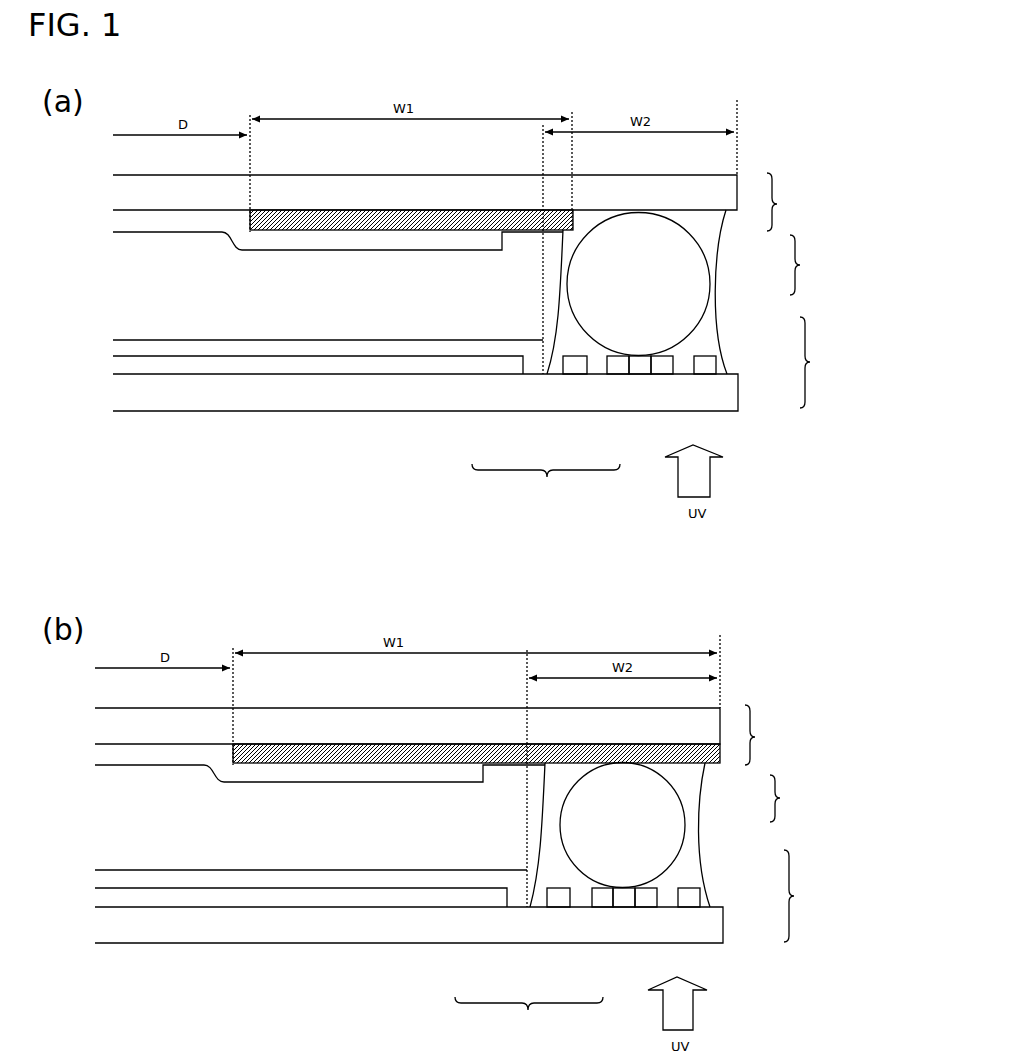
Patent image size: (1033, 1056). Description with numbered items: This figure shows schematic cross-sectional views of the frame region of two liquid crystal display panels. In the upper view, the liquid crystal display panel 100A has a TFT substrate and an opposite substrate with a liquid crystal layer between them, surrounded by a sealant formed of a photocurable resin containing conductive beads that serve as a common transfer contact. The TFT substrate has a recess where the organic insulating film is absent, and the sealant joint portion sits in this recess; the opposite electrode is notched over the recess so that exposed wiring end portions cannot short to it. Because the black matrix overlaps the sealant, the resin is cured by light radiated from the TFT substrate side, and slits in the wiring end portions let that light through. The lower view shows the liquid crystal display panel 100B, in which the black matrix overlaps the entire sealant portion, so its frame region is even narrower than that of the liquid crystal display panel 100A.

The liquid crystal display panel 100A is at (715, 92).
The liquid crystal display panel 100B is at (689, 630).